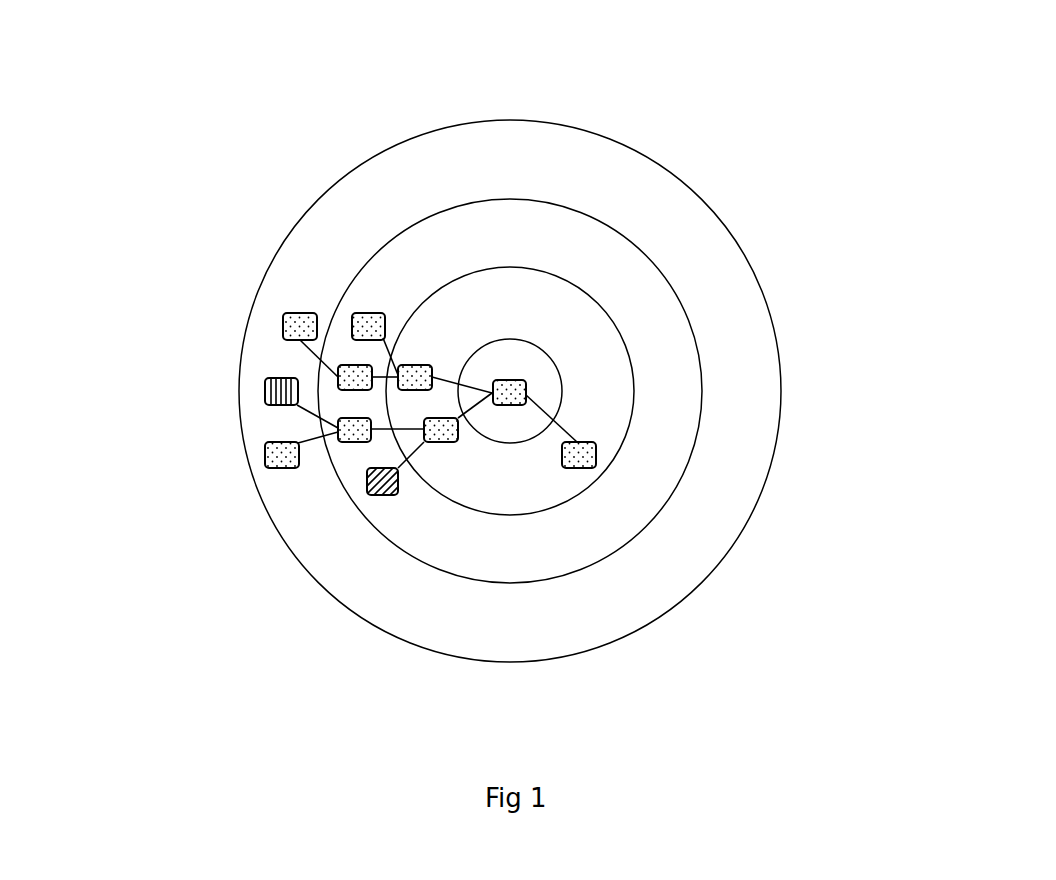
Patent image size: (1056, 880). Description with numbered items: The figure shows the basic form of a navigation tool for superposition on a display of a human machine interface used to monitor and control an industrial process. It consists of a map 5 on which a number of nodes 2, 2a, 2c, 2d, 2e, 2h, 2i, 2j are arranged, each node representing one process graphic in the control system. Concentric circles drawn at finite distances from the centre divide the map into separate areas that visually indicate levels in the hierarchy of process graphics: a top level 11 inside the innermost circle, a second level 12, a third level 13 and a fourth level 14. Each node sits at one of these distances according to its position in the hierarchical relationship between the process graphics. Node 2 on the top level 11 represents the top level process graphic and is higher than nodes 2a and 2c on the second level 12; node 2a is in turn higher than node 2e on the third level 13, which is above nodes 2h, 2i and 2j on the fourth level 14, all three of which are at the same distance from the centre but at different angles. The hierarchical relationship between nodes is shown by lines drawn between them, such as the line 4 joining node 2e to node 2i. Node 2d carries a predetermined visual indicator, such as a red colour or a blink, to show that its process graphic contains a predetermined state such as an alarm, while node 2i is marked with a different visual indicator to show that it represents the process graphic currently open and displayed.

The node 2 is at (492, 368).
The node 2a is at (463, 448).
The node 2c is at (603, 457).
The node 2d is at (353, 492).
The node 2e is at (338, 448).
The node 2h is at (258, 467).
The node 2i is at (258, 392).
The node 2j is at (273, 315).
The line 4 is at (300, 420).
The map 5 is at (526, 34).
The top level 11 is at (537, 375).
The second level 12 is at (603, 378).
The third level 13 is at (678, 378).
The fourth level 14 is at (752, 375).